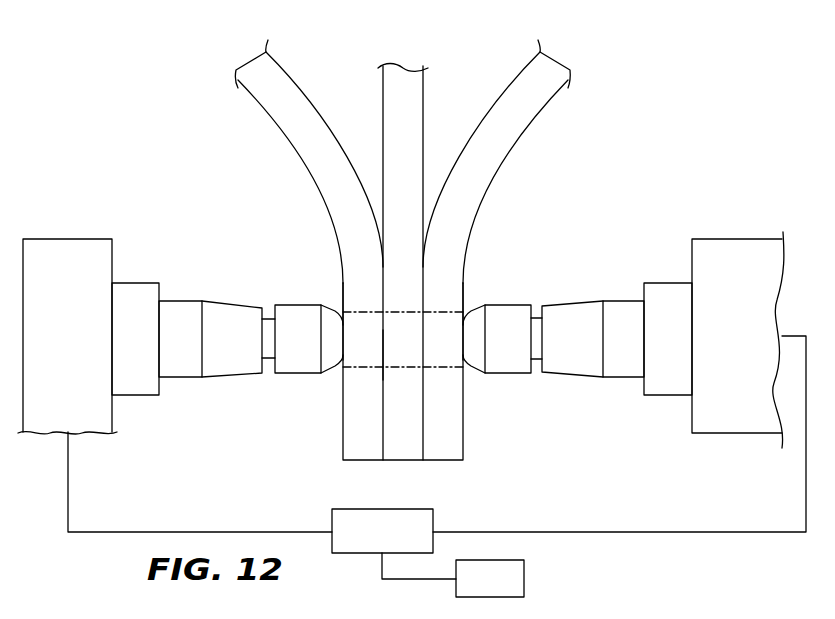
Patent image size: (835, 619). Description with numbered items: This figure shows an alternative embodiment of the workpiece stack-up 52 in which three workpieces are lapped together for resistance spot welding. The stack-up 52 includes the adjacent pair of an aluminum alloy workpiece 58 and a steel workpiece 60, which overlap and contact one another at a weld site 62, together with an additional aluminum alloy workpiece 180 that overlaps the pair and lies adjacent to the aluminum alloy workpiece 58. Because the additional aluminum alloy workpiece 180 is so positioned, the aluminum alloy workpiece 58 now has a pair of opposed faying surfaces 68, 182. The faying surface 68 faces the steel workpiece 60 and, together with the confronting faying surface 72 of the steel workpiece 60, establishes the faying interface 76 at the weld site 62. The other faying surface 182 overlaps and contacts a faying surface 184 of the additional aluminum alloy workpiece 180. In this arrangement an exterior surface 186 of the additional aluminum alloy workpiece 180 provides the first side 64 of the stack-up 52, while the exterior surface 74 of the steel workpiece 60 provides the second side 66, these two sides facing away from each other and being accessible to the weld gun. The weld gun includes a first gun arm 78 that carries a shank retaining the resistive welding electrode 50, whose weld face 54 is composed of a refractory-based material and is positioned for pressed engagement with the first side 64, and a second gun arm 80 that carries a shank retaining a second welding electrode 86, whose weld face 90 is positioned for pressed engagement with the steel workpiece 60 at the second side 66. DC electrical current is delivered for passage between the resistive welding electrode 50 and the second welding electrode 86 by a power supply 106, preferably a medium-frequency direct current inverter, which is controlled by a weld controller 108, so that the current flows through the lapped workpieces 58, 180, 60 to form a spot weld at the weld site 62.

The resistive welding electrode 50 is at (518, 375).
The workpiece stack-up 52 is at (338, 464).
The weld face 54 is at (463, 350).
The aluminum alloy workpiece 58 is at (403, 100).
The steel workpiece 60 is at (268, 80).
The weld site 62 is at (373, 365).
The first side 64 is at (464, 284).
The second side 66 is at (342, 284).
The faying surface 68 is at (383, 108).
The faying surface 72 is at (306, 88).
The exterior surface 74 is at (286, 124).
The faying interface 76 is at (383, 347).
The first gun arm 78 is at (740, 262).
The second gun arm 80 is at (96, 262).
The second welding electrode 86 is at (285, 377).
The weld face 90 is at (343, 350).
The power supply 106 is at (394, 544).
The weld controller 108 is at (490, 578).
The additional aluminum alloy workpiece 180 is at (517, 113).
The faying surface 182 is at (423, 100).
The faying surface 184 is at (523, 63).
The exterior surface 186 is at (548, 96).